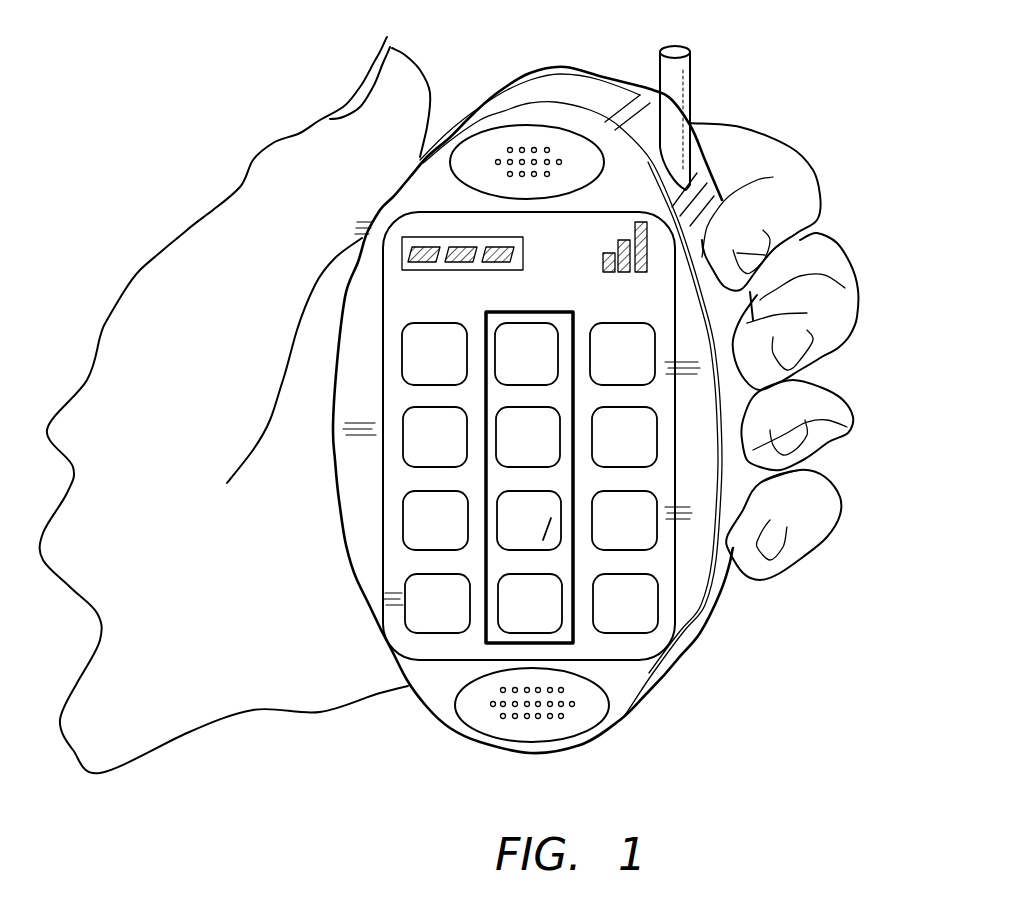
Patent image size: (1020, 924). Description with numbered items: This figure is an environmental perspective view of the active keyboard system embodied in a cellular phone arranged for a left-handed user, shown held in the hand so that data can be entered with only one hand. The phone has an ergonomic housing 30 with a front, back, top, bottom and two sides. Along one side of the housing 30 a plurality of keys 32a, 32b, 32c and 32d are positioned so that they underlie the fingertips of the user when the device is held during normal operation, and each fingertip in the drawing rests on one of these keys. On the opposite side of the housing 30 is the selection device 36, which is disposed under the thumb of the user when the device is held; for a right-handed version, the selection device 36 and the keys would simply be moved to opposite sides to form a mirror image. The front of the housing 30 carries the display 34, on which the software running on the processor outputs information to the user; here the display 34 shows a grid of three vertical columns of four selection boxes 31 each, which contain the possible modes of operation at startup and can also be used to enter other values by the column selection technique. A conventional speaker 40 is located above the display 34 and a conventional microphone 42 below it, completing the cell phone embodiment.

The housing 30 is at (357, 493).
The selection boxes 31 is at (533, 337).
The key 32a is at (820, 213).
The key 32b is at (846, 337).
The key 32c is at (847, 427).
The key 32d is at (767, 580).
The display 34 is at (484, 436).
The selection device 36 is at (373, 210).
The speaker 40 is at (520, 130).
The microphone 42 is at (597, 710).